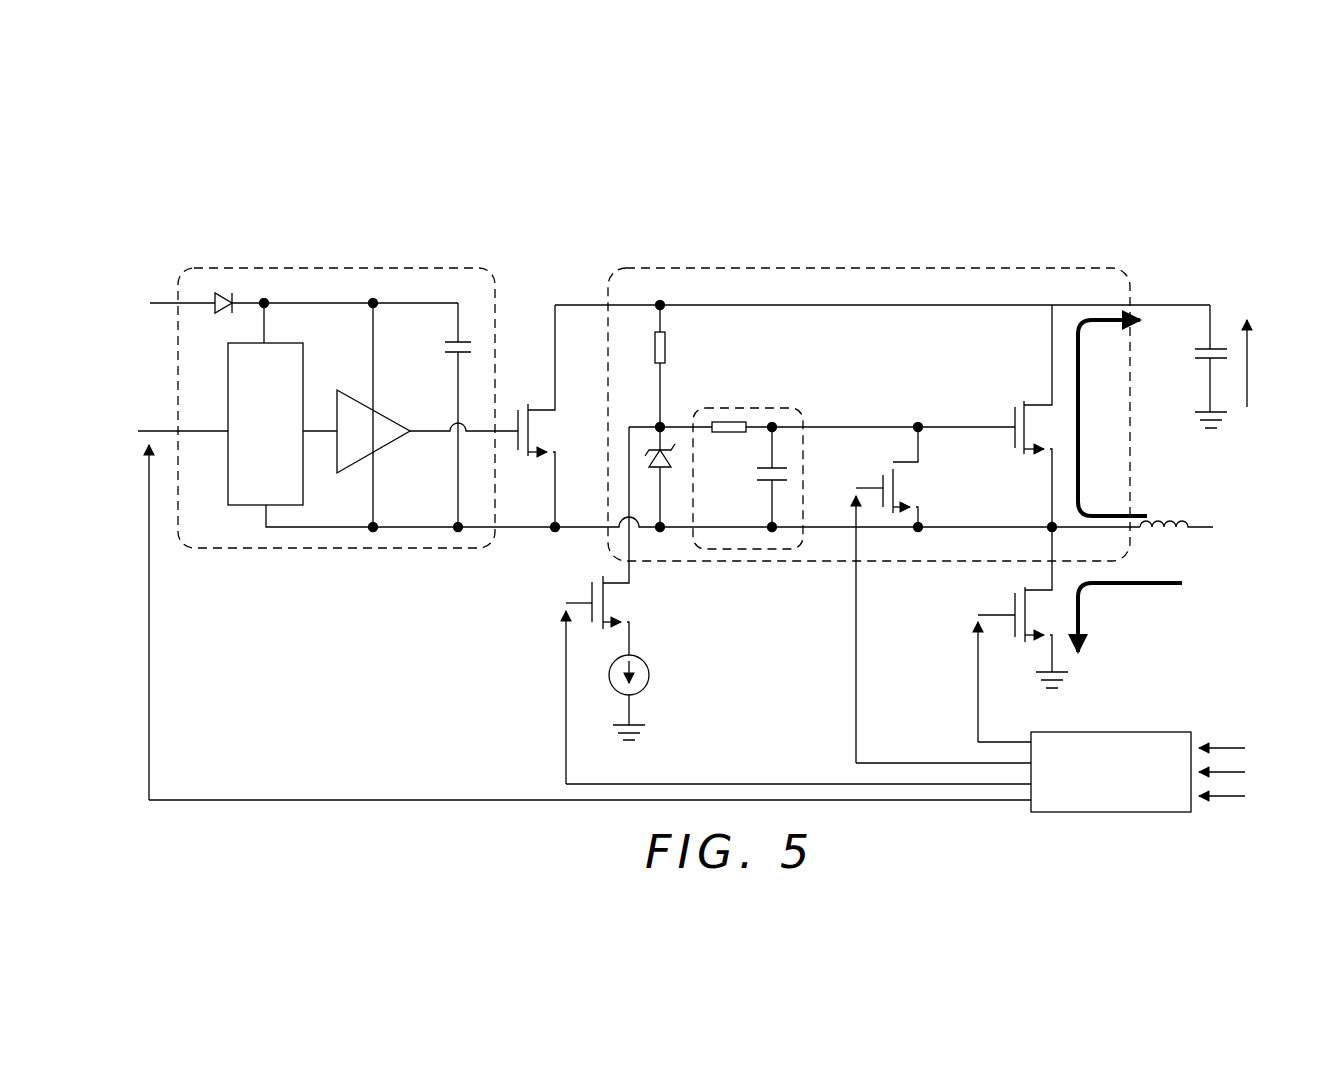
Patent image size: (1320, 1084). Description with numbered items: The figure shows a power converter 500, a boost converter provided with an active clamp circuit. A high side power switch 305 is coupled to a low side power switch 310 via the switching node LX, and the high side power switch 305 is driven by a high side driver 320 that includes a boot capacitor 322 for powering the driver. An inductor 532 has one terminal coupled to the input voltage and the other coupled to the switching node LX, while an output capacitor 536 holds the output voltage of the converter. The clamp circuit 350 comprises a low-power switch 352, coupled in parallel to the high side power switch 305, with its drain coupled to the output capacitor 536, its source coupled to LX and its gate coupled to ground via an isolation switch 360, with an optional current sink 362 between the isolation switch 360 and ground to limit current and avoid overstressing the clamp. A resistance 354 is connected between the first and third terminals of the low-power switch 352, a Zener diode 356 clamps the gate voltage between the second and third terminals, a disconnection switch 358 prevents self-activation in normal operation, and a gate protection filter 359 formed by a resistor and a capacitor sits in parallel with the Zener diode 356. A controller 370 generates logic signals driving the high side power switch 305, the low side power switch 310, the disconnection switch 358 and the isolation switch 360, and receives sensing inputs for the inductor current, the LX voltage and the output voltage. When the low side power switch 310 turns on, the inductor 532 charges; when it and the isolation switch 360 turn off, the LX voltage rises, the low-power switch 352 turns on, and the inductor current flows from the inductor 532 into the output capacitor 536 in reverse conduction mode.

The power converter 500 is at (205, 212).
The high side driver 320 is at (248, 549).
The boot capacitor 322 is at (450, 362).
The high side power switch 305 is at (522, 408).
The clamp circuit 350 is at (614, 268).
The resistance R1 354 is at (668, 345).
The Zener diode D1 356 is at (648, 452).
The gate protection filter 359 is at (804, 417).
The disconnection switch Q1 358 is at (925, 472).
The low-power switch LPSW 352 is at (1020, 405).
The output capacitor Cout 536 is at (1200, 364).
The inductor 532 is at (1165, 521).
The isolation switch 360 is at (617, 602).
The current sink 362 is at (609, 677).
The low side power switch 310 is at (1017, 645).
The controller 370 is at (1128, 732).